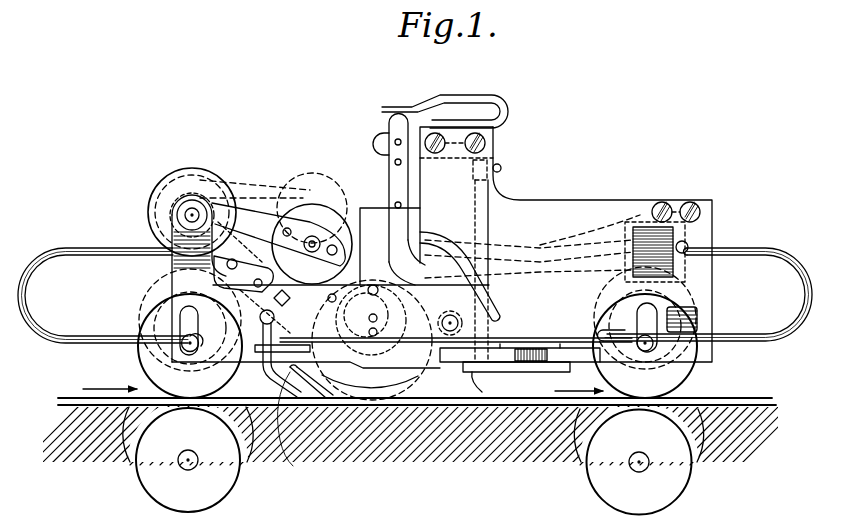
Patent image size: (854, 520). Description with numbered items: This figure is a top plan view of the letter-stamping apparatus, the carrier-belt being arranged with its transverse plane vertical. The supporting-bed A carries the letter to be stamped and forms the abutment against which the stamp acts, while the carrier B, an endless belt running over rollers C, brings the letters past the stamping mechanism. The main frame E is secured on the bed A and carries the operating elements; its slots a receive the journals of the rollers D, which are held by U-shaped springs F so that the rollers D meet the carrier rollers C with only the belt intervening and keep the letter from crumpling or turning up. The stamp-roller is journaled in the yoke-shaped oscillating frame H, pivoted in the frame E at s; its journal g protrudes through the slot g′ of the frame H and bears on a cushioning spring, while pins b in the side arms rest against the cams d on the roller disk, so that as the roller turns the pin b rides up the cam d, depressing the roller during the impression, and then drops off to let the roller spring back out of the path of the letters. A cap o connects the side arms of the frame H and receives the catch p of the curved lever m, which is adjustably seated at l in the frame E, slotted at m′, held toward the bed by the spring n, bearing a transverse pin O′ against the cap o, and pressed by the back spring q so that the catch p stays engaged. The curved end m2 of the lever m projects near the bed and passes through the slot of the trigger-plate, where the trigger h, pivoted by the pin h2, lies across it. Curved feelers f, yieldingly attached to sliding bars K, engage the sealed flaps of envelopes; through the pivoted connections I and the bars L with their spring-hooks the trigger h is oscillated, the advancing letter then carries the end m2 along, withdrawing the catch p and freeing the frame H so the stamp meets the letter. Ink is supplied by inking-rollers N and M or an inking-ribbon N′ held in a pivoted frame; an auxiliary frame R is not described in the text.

The supporting-bed A is at (410, 439).
The carrier B is at (417, 392).
The carrier rollers C is at (414, 461).
The rollers D is at (417, 332).
The main frame E is at (543, 311).
The U-shaped springs F is at (415, 297).
The oscillating frame H is at (390, 246).
The pivoted connections I is at (552, 340).
The sliding bars K is at (291, 427).
The bars L is at (443, 365).
The inking-roller M is at (312, 244).
The inking-roller N is at (192, 212).
The inking-ribbon N′ is at (273, 204).
The pin O′ is at (185, 215).
The rocking block R is at (243, 272).
The slots a is at (200, 320).
The pins b is at (375, 281).
The cams d is at (352, 315).
The spring e is at (687, 310).
The feelers f is at (264, 380).
The journal g is at (377, 318).
The slot g′ is at (369, 332).
The trigger h is at (512, 362).
The pin h2 is at (544, 383).
The recessed seat l is at (394, 141).
The curved lever m is at (389, 188).
The slot m′ is at (394, 163).
The end of lever m2 is at (469, 382).
The spring n is at (465, 96).
The cap o is at (402, 205).
The catch p is at (407, 251).
The spring q is at (488, 204).
The pivot s is at (690, 245).